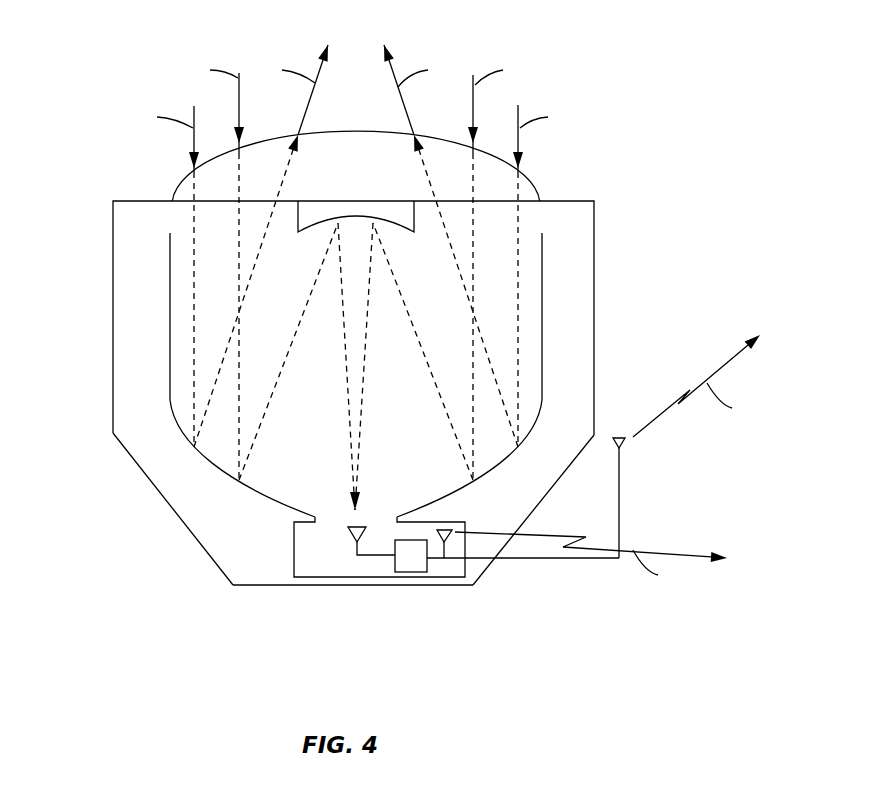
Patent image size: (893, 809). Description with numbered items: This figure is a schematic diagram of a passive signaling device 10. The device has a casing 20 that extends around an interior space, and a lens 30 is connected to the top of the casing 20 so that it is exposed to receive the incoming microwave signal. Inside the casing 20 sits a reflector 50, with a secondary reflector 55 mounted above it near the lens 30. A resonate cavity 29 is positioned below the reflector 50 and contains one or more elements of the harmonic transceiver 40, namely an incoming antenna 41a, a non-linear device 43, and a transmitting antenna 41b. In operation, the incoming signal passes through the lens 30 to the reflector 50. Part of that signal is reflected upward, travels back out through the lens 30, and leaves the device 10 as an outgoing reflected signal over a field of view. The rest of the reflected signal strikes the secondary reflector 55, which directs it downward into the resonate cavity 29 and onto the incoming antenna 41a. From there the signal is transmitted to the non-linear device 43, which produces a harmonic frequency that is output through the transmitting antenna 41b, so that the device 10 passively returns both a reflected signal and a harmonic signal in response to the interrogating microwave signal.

The signaling device 10 is at (92, 93).
The casing 20 is at (113, 326).
The resonate cavity 29 is at (310, 547).
The lens 30 is at (533, 185).
The harmonic transceiver 40 is at (264, 611).
The incoming antenna 41a is at (349, 528).
The transmitting antenna 41b is at (448, 537).
The non-linear device 43 is at (421, 565).
The reflector 50 is at (198, 453).
The secondary reflector 55 is at (390, 224).